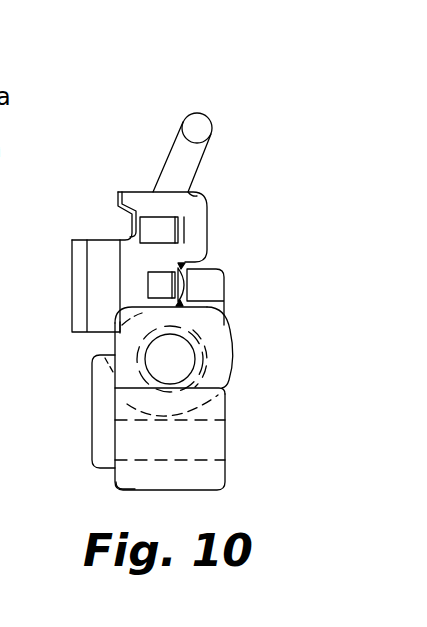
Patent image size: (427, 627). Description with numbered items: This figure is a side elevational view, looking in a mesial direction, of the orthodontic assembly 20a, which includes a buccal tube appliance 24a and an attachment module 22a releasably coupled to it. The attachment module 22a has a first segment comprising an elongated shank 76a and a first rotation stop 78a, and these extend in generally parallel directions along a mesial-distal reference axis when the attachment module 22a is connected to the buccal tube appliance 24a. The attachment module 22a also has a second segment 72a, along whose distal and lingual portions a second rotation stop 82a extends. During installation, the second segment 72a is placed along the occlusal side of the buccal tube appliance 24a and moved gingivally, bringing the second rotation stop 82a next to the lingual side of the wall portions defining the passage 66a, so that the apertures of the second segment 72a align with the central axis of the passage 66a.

The orthodontic assembly 20a is at (226, 104).
The buccal tube appliance 24a is at (139, 185).
The first rotation stop 78a is at (215, 282).
The attachment module 22a is at (244, 451).
The elongated shank 76a is at (163, 350).
The passage 66a is at (112, 388).
The second rotation stop 82a is at (97, 422).
The second segment 72a is at (110, 493).